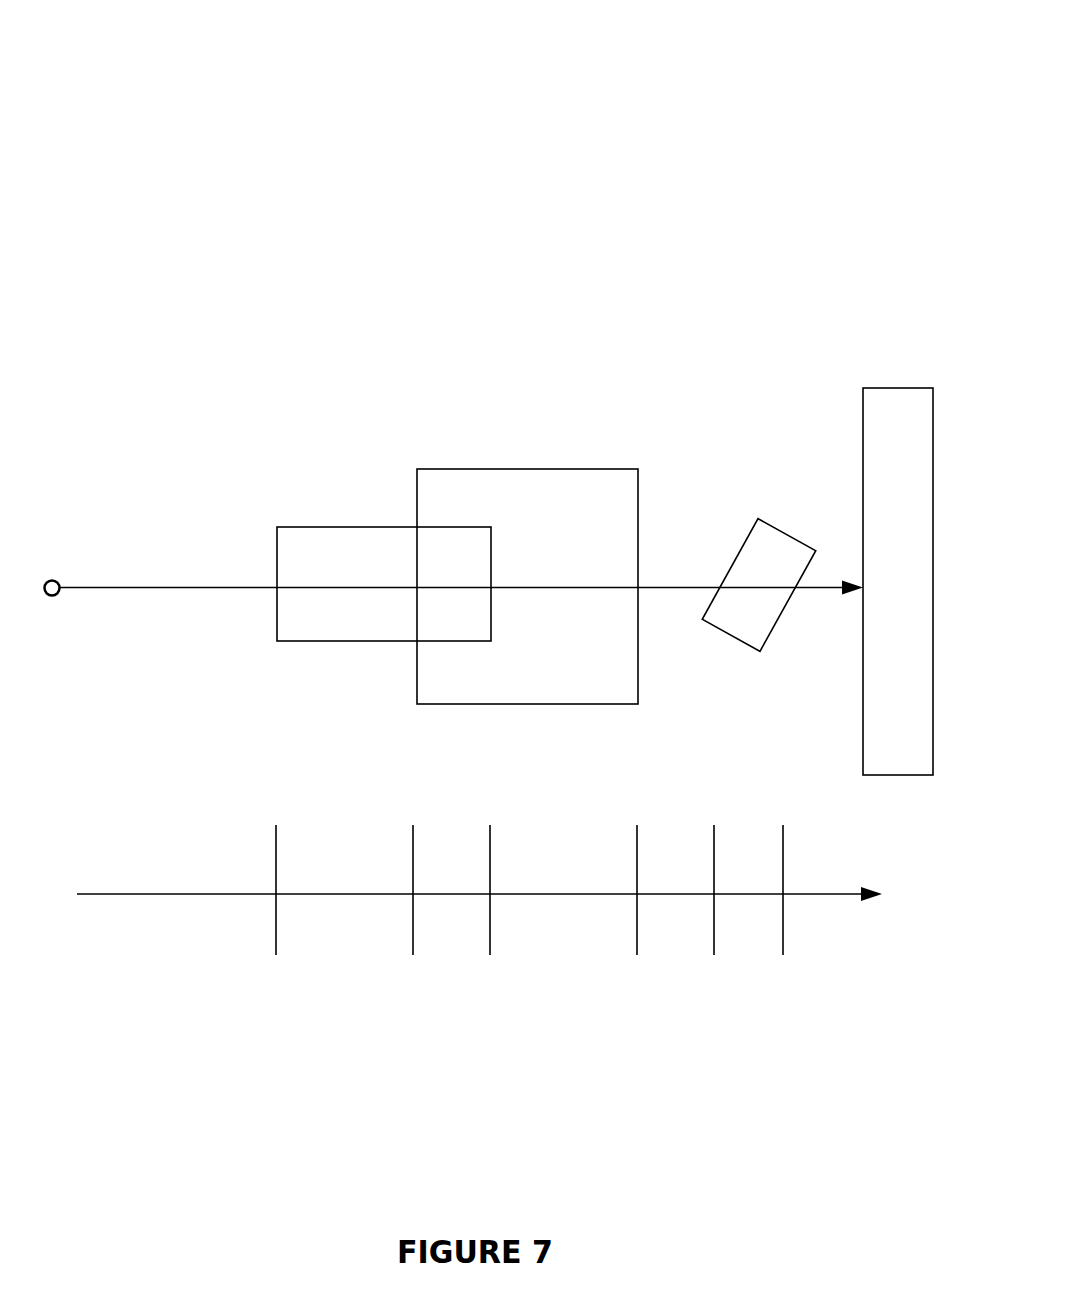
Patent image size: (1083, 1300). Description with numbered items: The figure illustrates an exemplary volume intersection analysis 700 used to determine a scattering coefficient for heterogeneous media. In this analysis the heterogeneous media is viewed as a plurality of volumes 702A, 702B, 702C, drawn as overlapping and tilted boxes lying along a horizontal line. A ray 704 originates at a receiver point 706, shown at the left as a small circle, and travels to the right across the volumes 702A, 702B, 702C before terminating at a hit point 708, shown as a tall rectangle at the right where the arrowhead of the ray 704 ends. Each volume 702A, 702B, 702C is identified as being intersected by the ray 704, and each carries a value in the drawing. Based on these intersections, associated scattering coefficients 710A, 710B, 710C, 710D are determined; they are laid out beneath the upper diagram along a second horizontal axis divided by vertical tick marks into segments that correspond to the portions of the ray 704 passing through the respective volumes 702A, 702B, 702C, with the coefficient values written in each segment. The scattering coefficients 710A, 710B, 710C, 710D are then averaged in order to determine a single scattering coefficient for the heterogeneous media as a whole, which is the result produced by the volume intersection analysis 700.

The volume intersection analysis 700 is at (897, 131).
The volume 702A is at (323, 498).
The volume 702B is at (533, 441).
The volume 702C is at (786, 505).
The ray 704 is at (193, 587).
The receiver point 706 is at (54, 581).
The hit point 708 is at (889, 388).
The scattering coefficient 710A is at (365, 830).
The scattering coefficient 710B is at (474, 830).
The scattering coefficient 710C is at (568, 830).
The scattering coefficient 710D is at (772, 833).